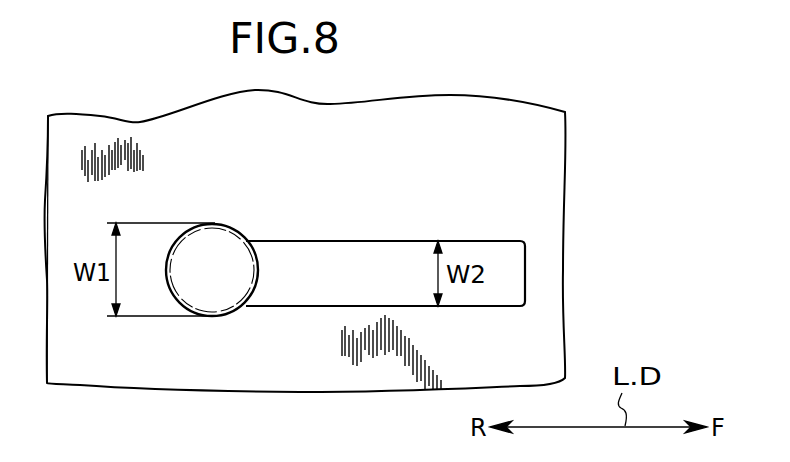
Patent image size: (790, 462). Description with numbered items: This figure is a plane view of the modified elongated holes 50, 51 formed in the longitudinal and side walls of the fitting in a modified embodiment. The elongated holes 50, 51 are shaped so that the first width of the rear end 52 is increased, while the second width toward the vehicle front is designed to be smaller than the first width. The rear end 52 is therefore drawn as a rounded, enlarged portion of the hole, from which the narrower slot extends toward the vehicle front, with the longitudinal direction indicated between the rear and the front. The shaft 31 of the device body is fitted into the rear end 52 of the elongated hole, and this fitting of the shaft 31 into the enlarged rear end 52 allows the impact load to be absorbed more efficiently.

The elongated hole 50 is at (404, 203).
The elongated hole 51 is at (47, 249).
The rear end 52 is at (231, 223).
The shaft 31 is at (257, 270).